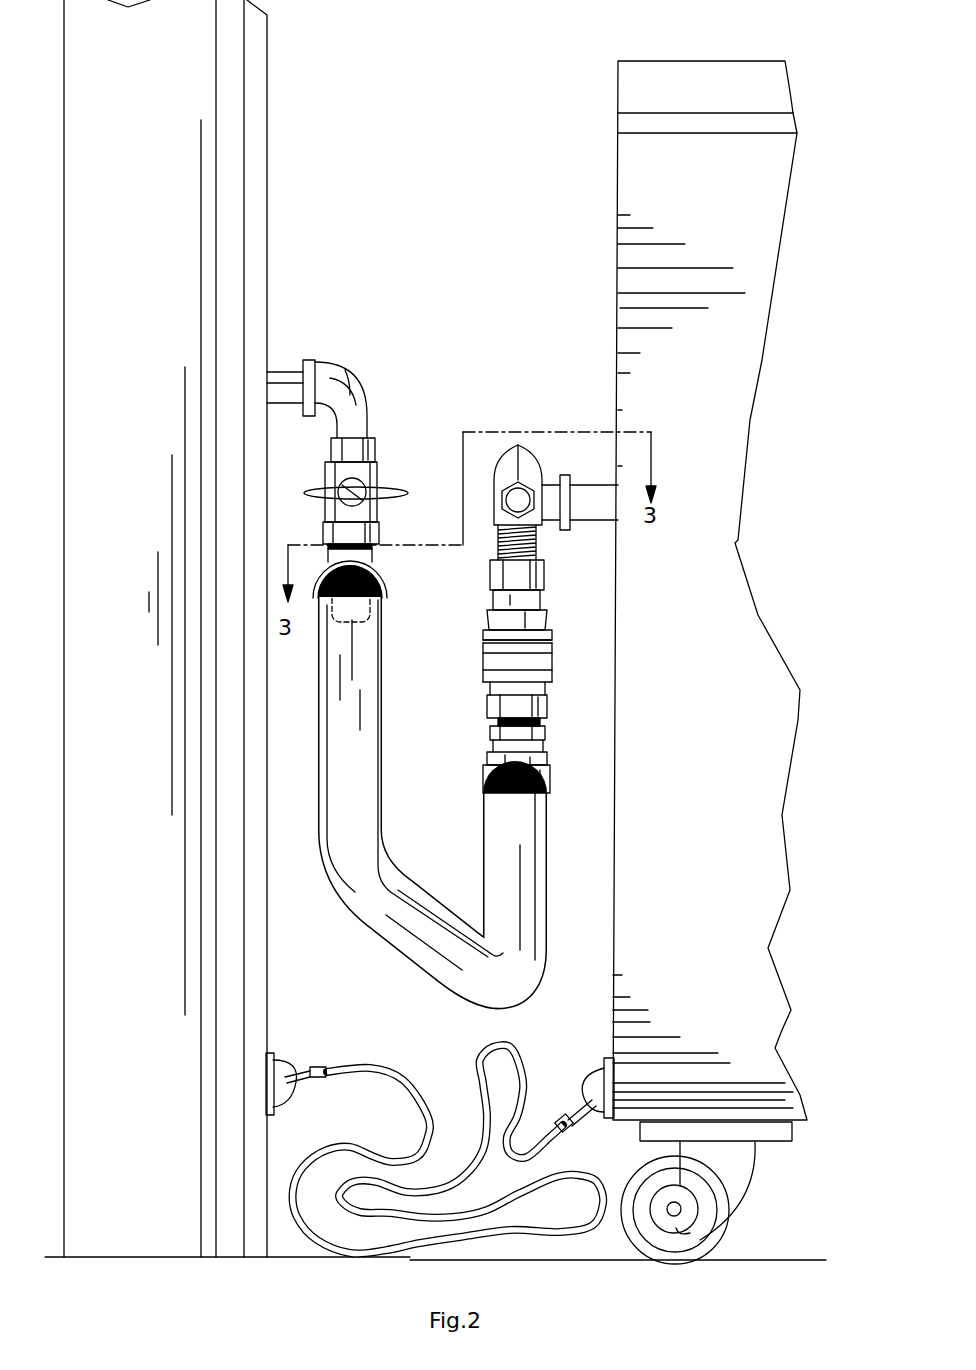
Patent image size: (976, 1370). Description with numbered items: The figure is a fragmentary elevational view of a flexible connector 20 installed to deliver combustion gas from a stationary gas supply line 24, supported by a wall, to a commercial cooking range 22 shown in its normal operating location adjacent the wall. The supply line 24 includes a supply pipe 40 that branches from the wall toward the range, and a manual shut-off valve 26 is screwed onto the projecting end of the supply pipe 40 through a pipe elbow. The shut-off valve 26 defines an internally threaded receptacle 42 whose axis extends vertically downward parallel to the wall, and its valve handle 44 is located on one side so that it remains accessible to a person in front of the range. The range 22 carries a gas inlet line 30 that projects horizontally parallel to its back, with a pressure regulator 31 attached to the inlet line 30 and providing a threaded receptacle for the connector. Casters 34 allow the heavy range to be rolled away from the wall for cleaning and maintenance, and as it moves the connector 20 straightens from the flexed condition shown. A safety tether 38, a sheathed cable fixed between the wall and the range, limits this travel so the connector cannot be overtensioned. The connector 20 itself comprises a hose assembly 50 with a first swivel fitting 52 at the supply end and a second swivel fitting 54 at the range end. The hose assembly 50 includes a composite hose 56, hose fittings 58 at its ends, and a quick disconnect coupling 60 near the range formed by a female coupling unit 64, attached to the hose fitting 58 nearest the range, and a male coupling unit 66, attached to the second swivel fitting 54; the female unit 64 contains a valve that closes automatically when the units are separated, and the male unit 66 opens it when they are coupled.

The flexible connector 20 is at (378, 998).
The commercial cooking range 22 is at (613, 238).
The stationary gas supply line 24 is at (300, 347).
The manual shut-off valve 26 is at (384, 476).
The gas inlet line 30 is at (591, 482).
The pressure regulator 31 is at (516, 449).
The casters 34 is at (680, 1233).
The safety tether 38 is at (310, 1232).
The supply pipe 40 is at (279, 358).
The internally threaded receptacle 42 is at (325, 527).
The valve handle 44 is at (327, 463).
The hose assembly 50 is at (352, 935).
The first swivel fitting 52 is at (388, 608).
The second swivel fitting 54 is at (492, 503).
The composite hose 56 is at (398, 923).
The hose fittings 58 is at (335, 625).
The quick disconnect coupling 60 is at (558, 628).
The female coupling unit 64 is at (550, 687).
The male coupling unit 66 is at (538, 600).